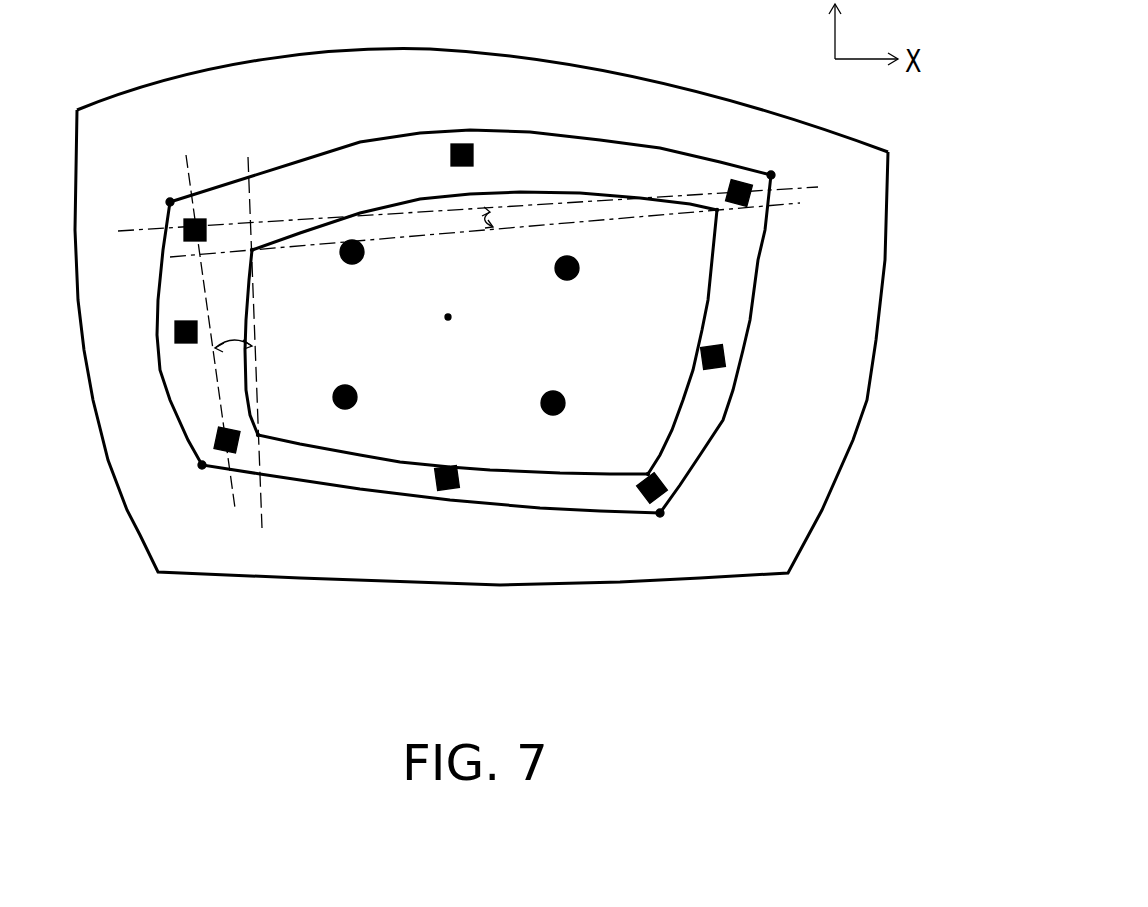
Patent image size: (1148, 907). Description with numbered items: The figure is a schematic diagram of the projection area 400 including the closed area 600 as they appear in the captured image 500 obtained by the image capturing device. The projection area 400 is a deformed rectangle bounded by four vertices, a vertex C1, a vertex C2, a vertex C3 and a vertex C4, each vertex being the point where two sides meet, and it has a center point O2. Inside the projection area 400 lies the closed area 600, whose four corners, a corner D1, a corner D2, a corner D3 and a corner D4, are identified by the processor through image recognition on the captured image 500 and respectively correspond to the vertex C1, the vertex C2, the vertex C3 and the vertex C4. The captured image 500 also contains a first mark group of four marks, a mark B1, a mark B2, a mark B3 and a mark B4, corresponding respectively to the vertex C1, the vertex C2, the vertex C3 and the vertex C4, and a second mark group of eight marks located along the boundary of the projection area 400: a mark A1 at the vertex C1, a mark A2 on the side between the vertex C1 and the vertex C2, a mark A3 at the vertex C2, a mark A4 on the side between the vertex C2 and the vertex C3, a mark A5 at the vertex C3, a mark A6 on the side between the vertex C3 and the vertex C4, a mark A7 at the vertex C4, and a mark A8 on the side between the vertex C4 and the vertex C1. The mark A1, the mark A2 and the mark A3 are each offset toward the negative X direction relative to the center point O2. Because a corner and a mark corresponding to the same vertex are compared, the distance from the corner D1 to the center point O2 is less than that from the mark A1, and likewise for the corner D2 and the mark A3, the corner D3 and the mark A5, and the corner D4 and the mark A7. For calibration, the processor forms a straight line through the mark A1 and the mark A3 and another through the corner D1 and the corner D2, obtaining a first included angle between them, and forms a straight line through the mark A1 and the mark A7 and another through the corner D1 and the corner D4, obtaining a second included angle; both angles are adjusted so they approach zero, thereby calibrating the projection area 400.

The projection area 400 is at (590, 512).
The captured image 500 is at (743, 577).
The closed area 600 is at (488, 470).
The mark A1 is at (211, 212).
The mark A2 is at (184, 313).
The mark A3 is at (213, 424).
The mark A4 is at (446, 459).
The mark A5 is at (661, 474).
The mark A6 is at (719, 339).
The mark A7 is at (722, 182).
The mark A8 is at (445, 156).
The mark B1 is at (366, 265).
The mark B2 is at (362, 402).
The mark B3 is at (571, 404).
The mark B4 is at (584, 269).
The vertex C1 is at (154, 201).
The vertex C2 is at (192, 485).
The vertex C3 is at (673, 529).
The vertex C4 is at (787, 172).
The corner D1 is at (254, 252).
The corner D2 is at (259, 434).
The corner D3 is at (647, 473).
The corner D4 is at (716, 211).
The center point O2 is at (466, 316).